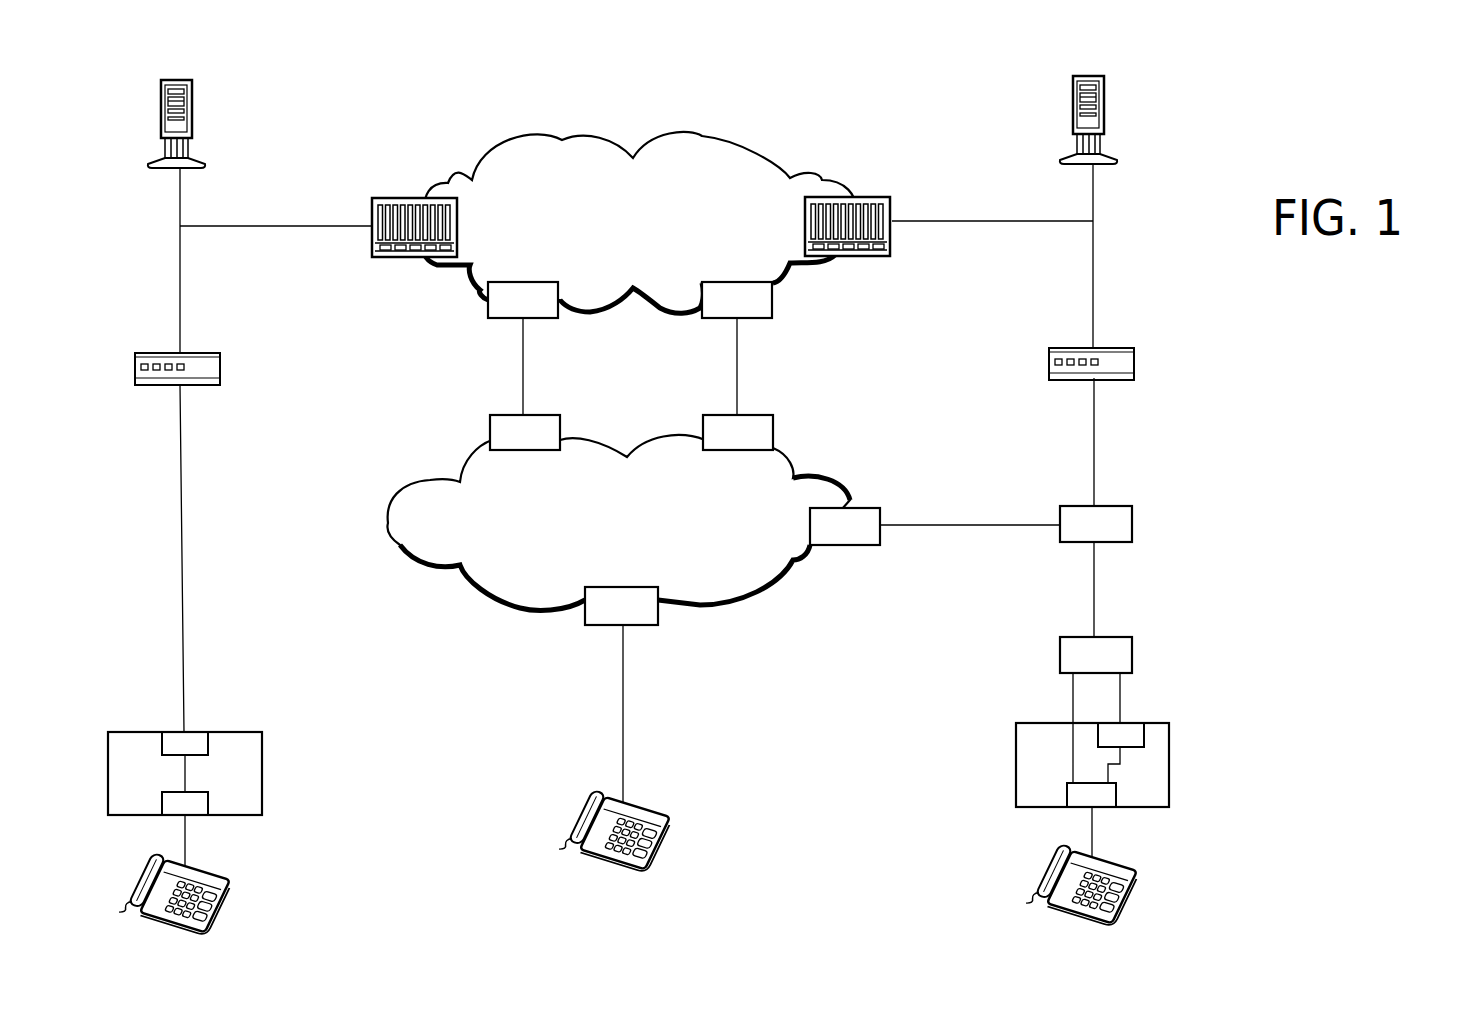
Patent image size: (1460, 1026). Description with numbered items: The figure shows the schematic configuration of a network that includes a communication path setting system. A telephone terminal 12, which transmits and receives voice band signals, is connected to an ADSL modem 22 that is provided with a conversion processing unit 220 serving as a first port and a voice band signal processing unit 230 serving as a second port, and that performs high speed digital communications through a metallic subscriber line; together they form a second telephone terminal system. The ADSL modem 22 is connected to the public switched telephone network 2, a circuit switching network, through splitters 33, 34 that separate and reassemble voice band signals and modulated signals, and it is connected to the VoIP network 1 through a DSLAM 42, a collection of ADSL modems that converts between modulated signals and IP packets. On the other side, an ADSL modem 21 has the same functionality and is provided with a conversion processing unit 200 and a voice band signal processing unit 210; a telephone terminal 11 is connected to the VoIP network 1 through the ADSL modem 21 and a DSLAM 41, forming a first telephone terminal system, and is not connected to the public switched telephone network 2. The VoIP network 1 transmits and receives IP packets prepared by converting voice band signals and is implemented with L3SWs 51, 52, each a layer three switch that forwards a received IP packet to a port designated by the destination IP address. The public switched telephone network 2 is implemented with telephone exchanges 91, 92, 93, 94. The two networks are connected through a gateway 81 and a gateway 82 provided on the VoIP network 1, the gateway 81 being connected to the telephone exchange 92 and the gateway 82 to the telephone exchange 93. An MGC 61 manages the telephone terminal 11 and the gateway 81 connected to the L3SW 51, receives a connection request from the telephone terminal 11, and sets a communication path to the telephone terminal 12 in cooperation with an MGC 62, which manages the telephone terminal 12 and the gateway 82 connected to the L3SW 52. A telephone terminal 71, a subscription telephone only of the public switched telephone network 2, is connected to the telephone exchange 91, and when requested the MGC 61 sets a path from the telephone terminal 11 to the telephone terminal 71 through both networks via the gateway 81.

The VoIP network 1 is at (740, 136).
The public switched telephone network 2 is at (780, 470).
The telephone terminal 11 is at (232, 903).
The telephone terminal 12 is at (1138, 893).
The telephone terminal 71 is at (664, 855).
The ADSL modem 21 is at (331, 775).
The ADSL modem 22 is at (1238, 759).
The conversion processing unit 200 is at (203, 742).
The voice band signal processing unit 210 is at (210, 807).
The conversion processing unit 220 is at (1128, 730).
The voice band signal processing unit 230 is at (1124, 807).
The splitter 33 is at (1125, 637).
The splitter 34 is at (1125, 506).
The DSLAM 41 is at (215, 353).
The DSLAM 42 is at (1125, 348).
The L3SW 51 is at (377, 197).
The L3SW 52 is at (884, 195).
The MGC 61 is at (192, 108).
The MGC 62 is at (1105, 104).
The gateway 81 is at (550, 318).
The gateway 82 is at (755, 318).
The telephone exchange 91 is at (645, 625).
The telephone exchange 92 is at (548, 415).
The telephone exchange 93 is at (760, 415).
The telephone exchange 94 is at (872, 545).